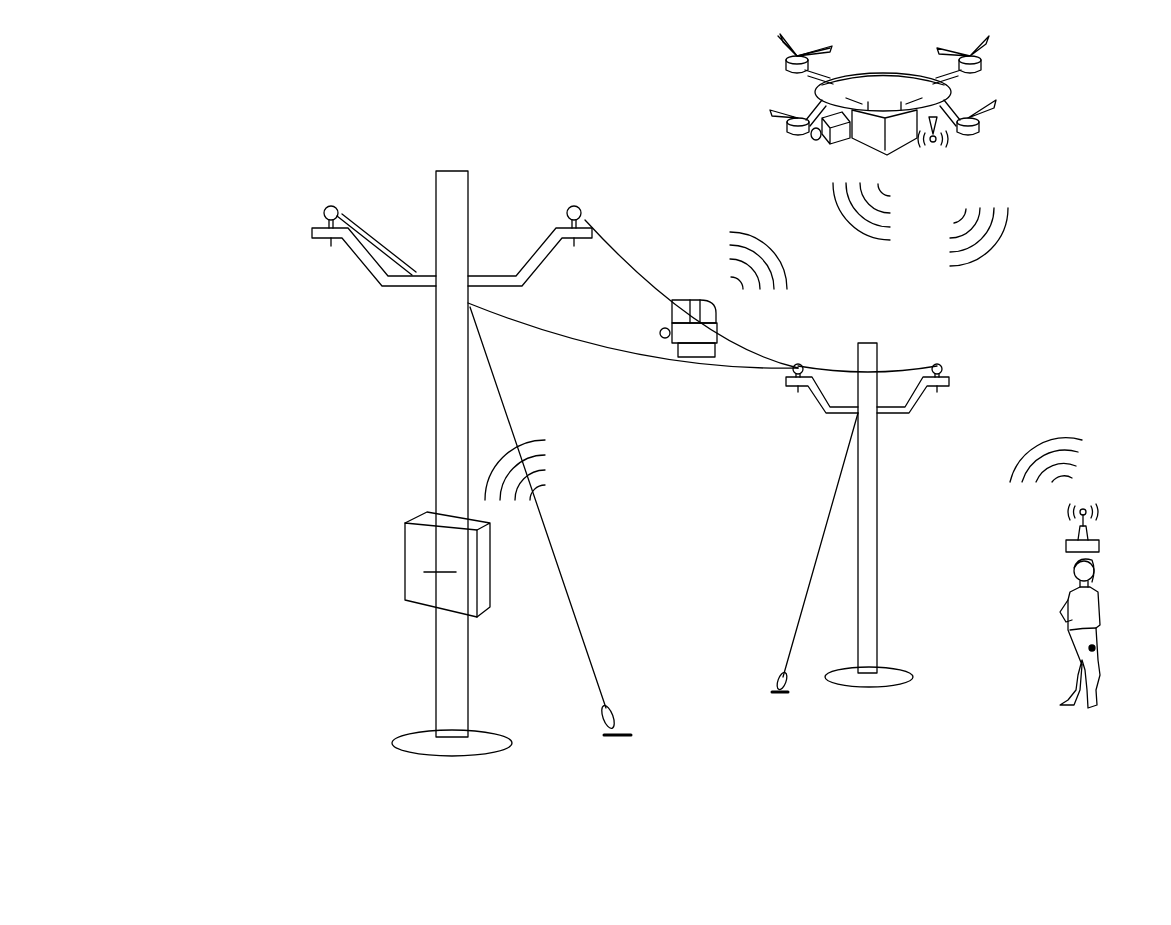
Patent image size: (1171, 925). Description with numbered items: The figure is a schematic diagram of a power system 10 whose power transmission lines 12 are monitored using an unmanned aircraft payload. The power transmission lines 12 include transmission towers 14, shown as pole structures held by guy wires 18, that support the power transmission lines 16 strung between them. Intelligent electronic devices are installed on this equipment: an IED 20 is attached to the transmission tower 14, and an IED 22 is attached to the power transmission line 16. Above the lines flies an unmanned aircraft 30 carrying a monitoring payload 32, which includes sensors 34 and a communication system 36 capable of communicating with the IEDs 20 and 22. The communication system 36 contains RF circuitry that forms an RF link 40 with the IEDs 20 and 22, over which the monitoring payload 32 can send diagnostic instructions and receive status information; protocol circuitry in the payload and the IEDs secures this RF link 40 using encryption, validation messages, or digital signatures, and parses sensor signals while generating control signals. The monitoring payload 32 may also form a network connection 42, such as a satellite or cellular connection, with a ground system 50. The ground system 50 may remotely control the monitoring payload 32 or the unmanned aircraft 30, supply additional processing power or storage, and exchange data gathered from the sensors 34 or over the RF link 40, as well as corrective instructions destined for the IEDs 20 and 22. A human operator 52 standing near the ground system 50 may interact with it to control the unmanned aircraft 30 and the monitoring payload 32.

The power system 10 is at (338, 132).
The power transmission lines 12 is at (337, 424).
The transmission towers 14 is at (470, 190).
The power transmission lines 16 is at (618, 250).
The guy wires 18 is at (583, 627).
The IED 20 is at (447, 564).
The IED 22 is at (665, 337).
The unmanned aircraft 30 is at (963, 98).
The monitoring payload 32 is at (900, 155).
The sensors 34 is at (826, 139).
The communication system 36 is at (948, 146).
The RF link 40 is at (773, 236).
The network connection 42 is at (1000, 262).
The ground system 50 is at (1100, 546).
The human operator 52 is at (1106, 727).